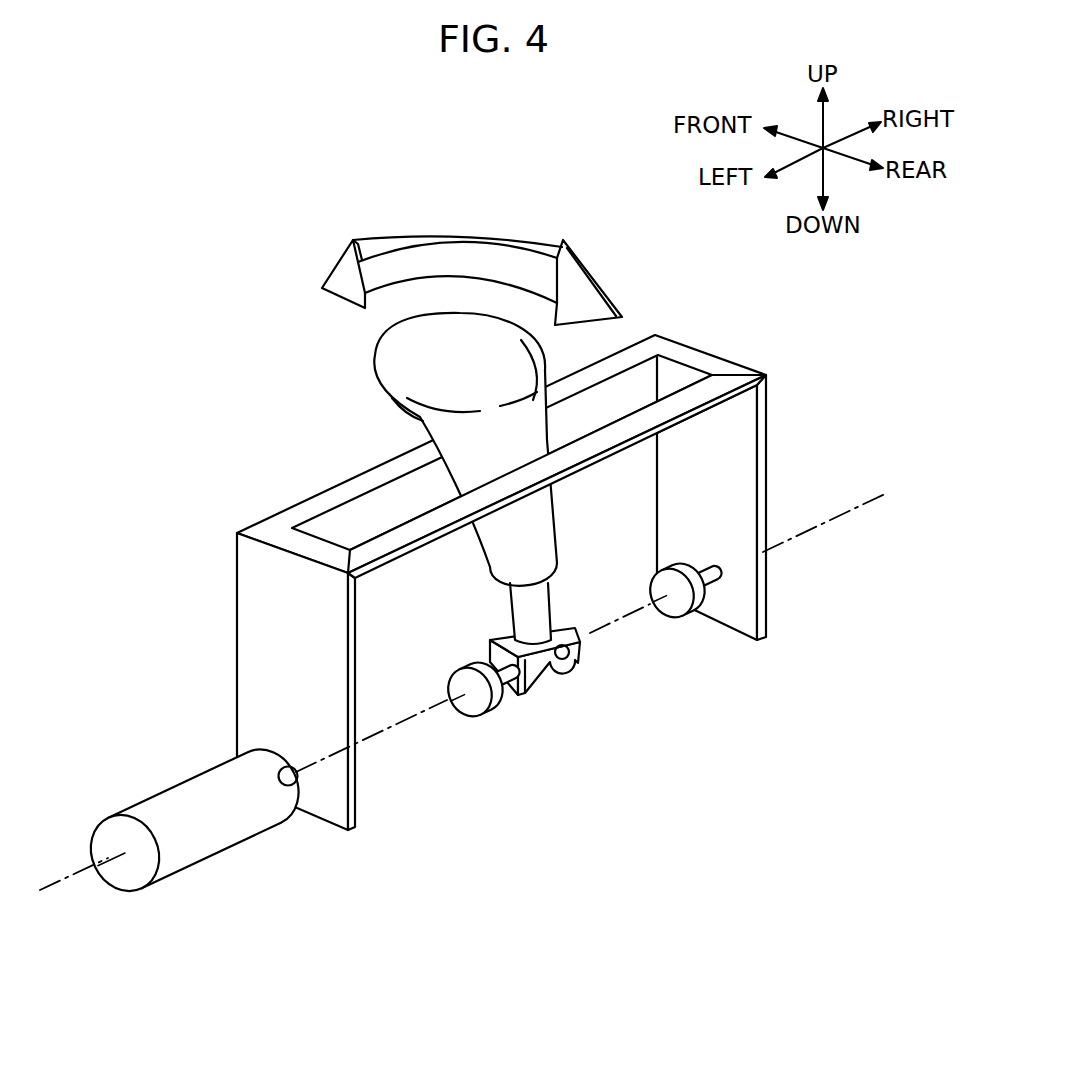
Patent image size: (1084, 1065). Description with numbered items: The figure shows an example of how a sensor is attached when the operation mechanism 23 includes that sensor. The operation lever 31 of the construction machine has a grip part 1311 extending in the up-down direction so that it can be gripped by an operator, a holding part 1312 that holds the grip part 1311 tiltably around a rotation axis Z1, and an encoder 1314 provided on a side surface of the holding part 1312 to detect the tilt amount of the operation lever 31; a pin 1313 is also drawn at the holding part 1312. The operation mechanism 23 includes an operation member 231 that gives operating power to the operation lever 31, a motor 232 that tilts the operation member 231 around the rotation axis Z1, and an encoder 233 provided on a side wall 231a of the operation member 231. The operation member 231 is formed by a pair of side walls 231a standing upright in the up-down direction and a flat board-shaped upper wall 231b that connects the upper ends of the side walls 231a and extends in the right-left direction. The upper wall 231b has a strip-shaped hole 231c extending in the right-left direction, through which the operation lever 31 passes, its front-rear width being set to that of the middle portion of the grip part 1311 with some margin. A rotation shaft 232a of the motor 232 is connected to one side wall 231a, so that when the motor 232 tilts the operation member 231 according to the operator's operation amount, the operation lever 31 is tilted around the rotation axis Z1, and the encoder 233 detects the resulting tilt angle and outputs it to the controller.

The operation mechanism 23 is at (735, 314).
The operation lever 31 is at (308, 315).
The operation member 231 is at (496, 582).
The side wall 231a is at (257, 625).
The upper wall 231b is at (262, 528).
The hole 231c is at (352, 527).
The motor 232 is at (190, 847).
The rotation shaft 232a is at (297, 790).
The encoder 233 is at (673, 610).
The grip part 1311 is at (527, 367).
The holding part 1312 is at (533, 657).
The pivot pin 1313 is at (505, 685).
The encoder 1314 is at (467, 707).
The rotation axis Z1 is at (833, 517).